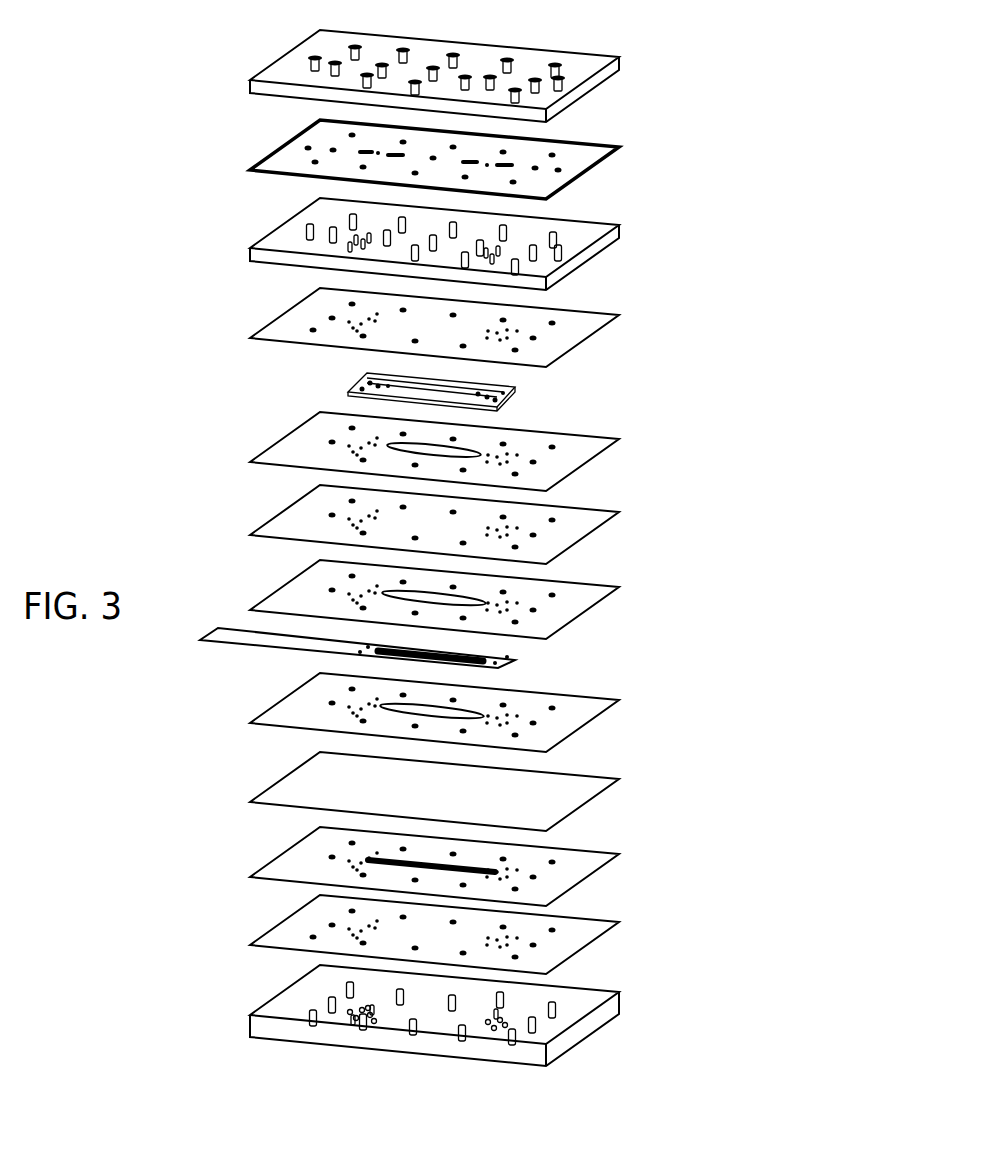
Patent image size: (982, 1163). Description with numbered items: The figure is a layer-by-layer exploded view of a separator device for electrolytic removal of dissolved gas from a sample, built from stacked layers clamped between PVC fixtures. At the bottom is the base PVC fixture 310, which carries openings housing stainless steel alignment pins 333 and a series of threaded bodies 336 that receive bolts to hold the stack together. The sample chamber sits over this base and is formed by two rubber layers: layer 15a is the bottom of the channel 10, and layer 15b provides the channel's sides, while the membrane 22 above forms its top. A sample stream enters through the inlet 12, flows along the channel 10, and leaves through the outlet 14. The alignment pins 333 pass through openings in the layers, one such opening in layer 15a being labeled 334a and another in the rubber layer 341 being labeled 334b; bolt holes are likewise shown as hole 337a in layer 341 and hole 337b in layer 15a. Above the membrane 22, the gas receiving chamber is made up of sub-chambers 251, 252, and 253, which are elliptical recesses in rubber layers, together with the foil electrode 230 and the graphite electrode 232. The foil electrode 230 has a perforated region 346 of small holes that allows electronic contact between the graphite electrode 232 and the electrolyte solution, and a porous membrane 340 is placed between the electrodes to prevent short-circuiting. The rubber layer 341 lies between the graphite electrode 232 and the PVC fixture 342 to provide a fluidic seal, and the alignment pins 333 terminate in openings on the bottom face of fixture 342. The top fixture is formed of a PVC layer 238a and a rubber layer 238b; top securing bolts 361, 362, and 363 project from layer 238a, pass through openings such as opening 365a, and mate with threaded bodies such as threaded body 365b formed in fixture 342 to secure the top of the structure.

The channel 10 is at (388, 858).
The inlet 12 is at (371, 1017).
The outlet 14 is at (493, 1029).
The sample chamber layer 15a is at (613, 925).
The sample chamber layer 15b is at (613, 857).
The membrane 22 is at (590, 800).
The electrode 230 is at (515, 664).
The graphite electrode 232 is at (520, 394).
The PVC top layer 238a is at (593, 78).
The rubber top layer 238b is at (597, 167).
The sub-chamber 251 is at (515, 713).
The sub-chamber 252 is at (505, 600).
The sub-chamber 253 is at (483, 455).
The base PVC fixture 310 is at (588, 1023).
The alignment pins 333 is at (353, 1018).
The opening for alignment pin 334a is at (353, 936).
The opening for alignment pin 334b is at (345, 327).
The threaded body 336 is at (290, 1028).
The hole 337a is at (312, 937).
The hole 337b is at (310, 330).
The membrane 340 is at (613, 522).
The rubber layer 341 is at (593, 333).
The PVC fixture 342 is at (620, 230).
The perforated region 346 is at (378, 655).
The top securing bolt 361 is at (312, 57).
The top securing bolt 362 is at (424, 63).
The top securing bolt 363 is at (585, 62).
The opening for top securing bolt 365a is at (306, 148).
The threaded body 365b is at (307, 230).